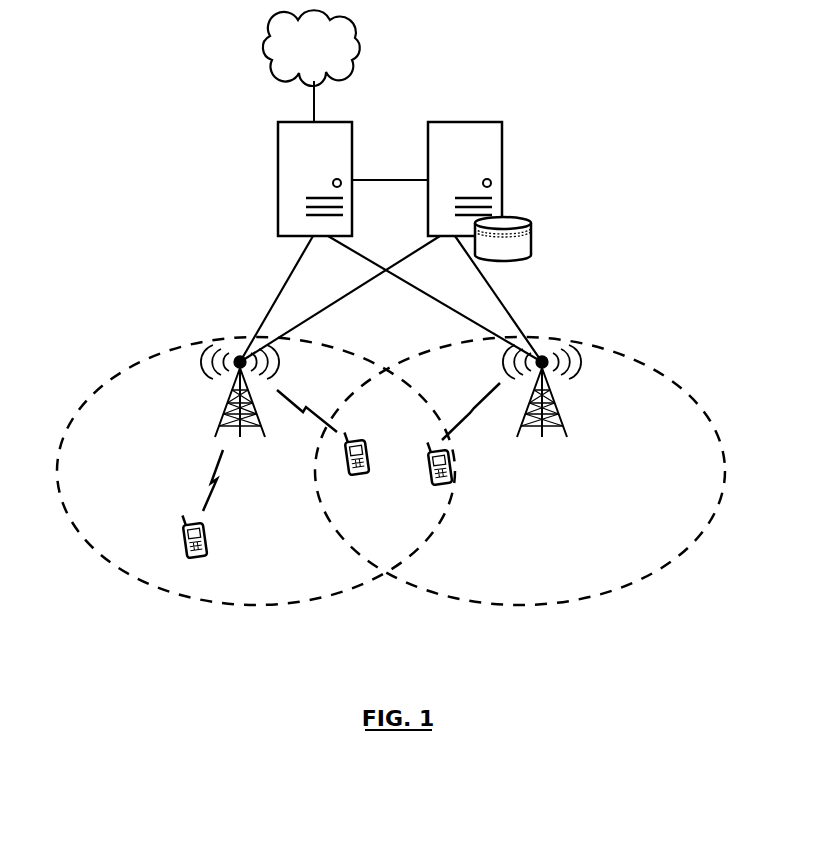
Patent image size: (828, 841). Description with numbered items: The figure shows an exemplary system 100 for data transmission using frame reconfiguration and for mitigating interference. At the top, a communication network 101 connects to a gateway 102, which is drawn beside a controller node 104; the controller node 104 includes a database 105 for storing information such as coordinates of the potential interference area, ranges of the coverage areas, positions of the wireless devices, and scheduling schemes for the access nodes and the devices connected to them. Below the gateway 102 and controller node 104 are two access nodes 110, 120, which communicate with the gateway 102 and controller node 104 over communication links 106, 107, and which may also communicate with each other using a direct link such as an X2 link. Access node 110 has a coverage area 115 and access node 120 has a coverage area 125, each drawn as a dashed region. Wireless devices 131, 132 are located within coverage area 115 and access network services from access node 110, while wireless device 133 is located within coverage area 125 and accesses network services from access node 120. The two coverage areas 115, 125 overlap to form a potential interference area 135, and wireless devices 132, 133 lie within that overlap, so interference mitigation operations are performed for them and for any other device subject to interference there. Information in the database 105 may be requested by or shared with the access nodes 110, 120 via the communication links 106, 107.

The system 100 is at (476, 56).
The communication network 101 is at (294, 54).
The gateway 102 is at (278, 152).
The controller node 104 is at (502, 165).
The database 105 is at (532, 235).
The communication link 106 is at (372, 265).
The communication link 107 is at (340, 302).
The access node 110 is at (226, 415).
The coverage area 115 is at (260, 605).
The access node 120 is at (558, 420).
The coverage area 125 is at (517, 605).
The wireless device 131 is at (194, 562).
The wireless device 132 is at (348, 471).
The wireless device 133 is at (440, 490).
The potential interference area 135 is at (388, 548).